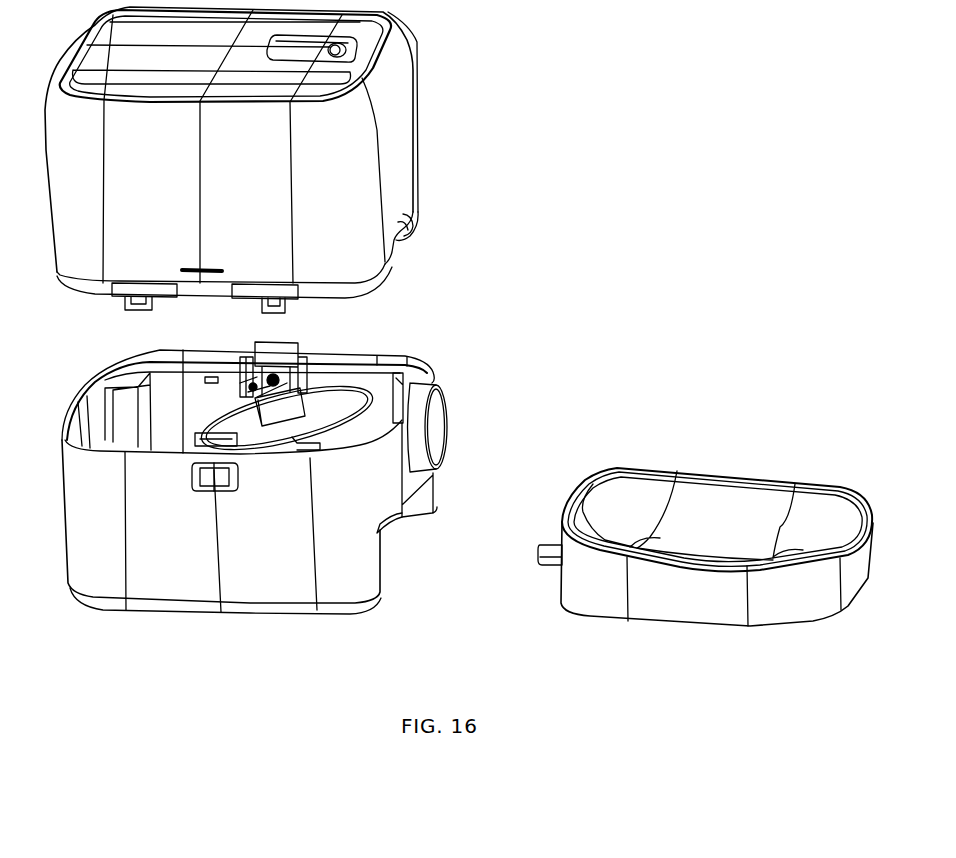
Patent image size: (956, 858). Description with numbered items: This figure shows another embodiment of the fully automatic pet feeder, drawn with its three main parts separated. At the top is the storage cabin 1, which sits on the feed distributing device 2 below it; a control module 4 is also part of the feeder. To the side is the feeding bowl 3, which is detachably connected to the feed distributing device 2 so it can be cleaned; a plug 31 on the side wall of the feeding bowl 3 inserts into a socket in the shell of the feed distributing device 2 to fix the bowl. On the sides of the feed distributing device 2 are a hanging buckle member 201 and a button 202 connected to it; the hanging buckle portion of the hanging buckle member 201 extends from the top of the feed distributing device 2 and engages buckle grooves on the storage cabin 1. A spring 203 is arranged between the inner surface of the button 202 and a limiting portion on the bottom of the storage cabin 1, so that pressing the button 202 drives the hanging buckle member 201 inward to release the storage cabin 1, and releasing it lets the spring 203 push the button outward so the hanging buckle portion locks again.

The storage cabin 1 is at (418, 120).
The feed distributing device 2 is at (247, 610).
The feeding bowl 3 is at (663, 470).
The control module 4 is at (432, 377).
The plug 31 is at (546, 527).
The hanging buckle member 201 is at (290, 340).
The button 202 is at (213, 490).
The spring 203 is at (270, 378).